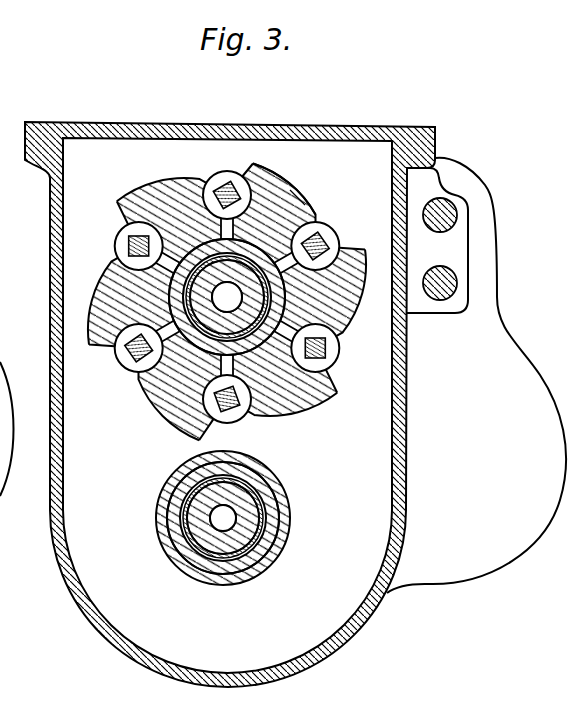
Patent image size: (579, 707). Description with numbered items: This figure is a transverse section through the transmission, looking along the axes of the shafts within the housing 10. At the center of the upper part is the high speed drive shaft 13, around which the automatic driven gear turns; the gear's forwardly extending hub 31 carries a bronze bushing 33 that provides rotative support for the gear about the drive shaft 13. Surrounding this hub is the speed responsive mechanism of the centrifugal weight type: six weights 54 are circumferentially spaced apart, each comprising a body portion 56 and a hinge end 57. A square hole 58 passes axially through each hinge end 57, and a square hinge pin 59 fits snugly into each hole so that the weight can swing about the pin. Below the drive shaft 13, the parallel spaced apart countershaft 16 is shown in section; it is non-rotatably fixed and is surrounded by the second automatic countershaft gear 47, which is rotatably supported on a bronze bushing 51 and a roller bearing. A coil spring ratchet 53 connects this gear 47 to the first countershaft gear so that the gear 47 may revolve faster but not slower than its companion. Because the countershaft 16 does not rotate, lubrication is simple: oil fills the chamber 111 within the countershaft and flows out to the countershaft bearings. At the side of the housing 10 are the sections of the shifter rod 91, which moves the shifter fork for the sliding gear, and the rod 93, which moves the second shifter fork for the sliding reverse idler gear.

The housing 10 is at (57, 184).
The high speed drive shaft 13 is at (243, 297).
The countershaft 16 is at (197, 513).
The hub 31 is at (190, 377).
The bronze bushing 33 is at (180, 299).
The second automatic countershaft gear 47 is at (166, 530).
The bronze bushing 51 is at (264, 495).
The coil spring ratchet 53 is at (270, 471).
The weights 54 is at (303, 172).
The body portion 56 is at (302, 197).
The hinge end 57 is at (222, 172).
The square holes 58 is at (114, 249).
The square hinge pins 59 is at (126, 356).
The rod 91 is at (446, 215).
The rod 93 is at (446, 283).
The chamber 111 is at (225, 520).